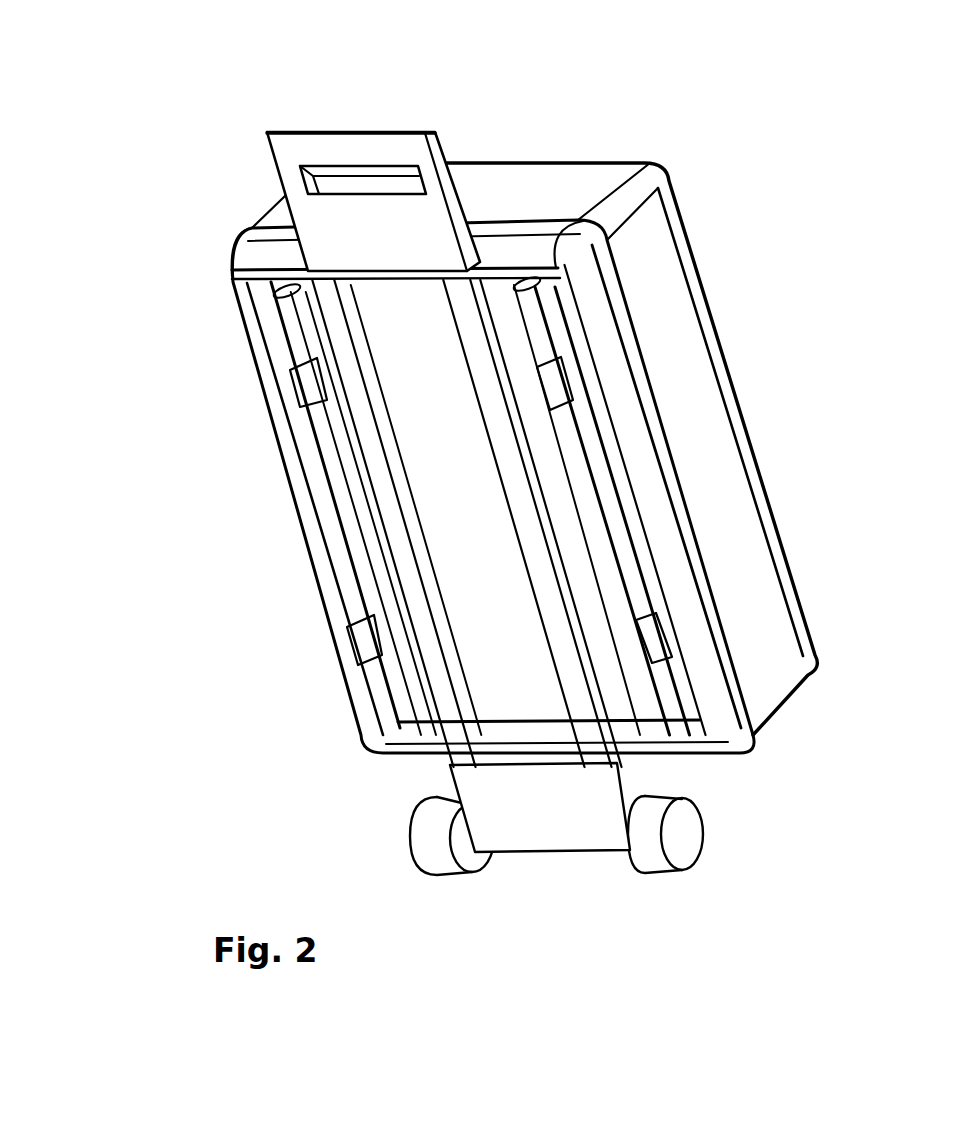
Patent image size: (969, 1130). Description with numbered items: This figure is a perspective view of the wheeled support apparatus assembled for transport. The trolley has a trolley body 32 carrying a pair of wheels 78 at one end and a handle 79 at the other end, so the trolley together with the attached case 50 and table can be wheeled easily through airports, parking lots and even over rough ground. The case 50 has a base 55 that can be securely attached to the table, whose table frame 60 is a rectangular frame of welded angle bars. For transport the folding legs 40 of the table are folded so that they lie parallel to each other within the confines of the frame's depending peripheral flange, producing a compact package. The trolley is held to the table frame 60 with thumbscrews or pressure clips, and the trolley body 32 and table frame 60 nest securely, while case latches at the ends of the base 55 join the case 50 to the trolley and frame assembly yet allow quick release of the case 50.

The case 50 is at (581, 142).
The base 55 is at (249, 248).
The folding legs 40 is at (259, 337).
The trolley body 32 is at (407, 502).
The table frame 60 is at (585, 350).
The wheels 78 is at (690, 838).
The handle 79 is at (338, 132).